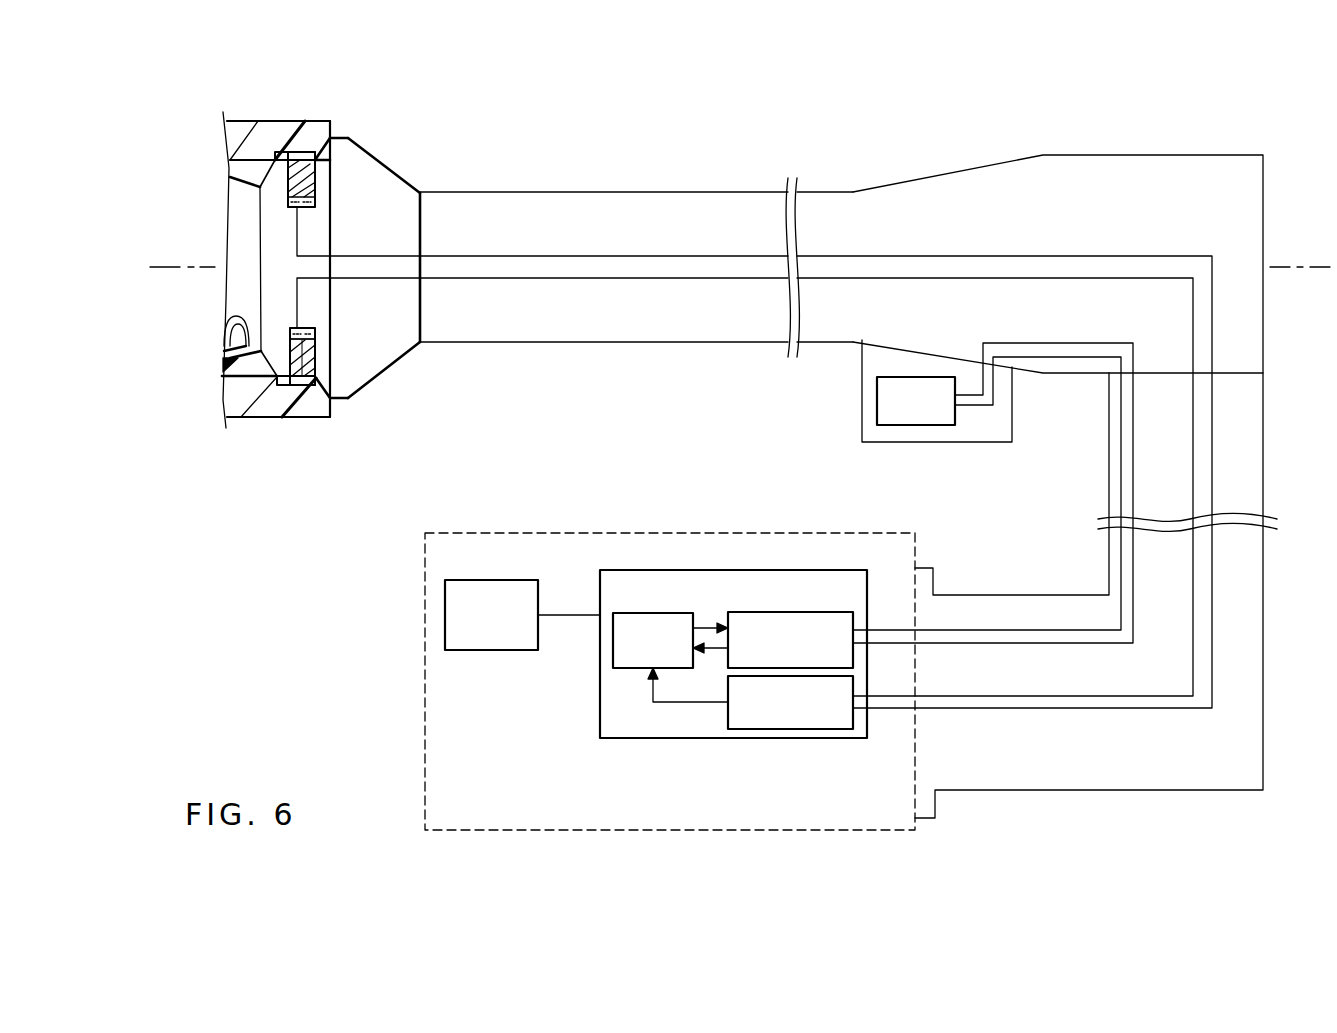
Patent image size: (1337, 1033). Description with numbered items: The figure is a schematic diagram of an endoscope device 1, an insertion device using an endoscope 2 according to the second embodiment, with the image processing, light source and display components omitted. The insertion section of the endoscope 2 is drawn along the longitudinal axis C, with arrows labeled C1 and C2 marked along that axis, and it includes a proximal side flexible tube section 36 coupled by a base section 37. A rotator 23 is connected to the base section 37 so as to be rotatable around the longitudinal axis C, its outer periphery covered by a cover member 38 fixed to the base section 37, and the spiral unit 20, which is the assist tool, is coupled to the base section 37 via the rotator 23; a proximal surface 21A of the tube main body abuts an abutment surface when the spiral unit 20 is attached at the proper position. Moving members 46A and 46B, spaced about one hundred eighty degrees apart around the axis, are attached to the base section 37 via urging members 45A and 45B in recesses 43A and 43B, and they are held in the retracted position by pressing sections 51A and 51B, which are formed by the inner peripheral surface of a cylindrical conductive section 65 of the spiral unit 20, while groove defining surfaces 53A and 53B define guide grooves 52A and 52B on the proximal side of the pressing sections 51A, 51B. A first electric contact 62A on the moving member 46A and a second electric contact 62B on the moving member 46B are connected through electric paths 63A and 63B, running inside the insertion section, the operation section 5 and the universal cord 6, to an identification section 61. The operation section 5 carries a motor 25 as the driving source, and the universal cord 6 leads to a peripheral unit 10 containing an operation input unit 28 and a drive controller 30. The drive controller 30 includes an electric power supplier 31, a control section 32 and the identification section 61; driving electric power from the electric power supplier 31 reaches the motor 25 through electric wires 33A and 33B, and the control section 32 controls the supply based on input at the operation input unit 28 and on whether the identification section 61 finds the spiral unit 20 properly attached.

The endoscope device 1 is at (989, 123).
The endoscope 2 is at (636, 244).
The operation section 5 is at (1188, 170).
The universal cord 6 is at (1243, 468).
The peripheral unit 10 is at (800, 532).
The spiral unit 20 is at (239, 422).
The proximal surface 21A is at (330, 130).
The rotator 23 is at (230, 331).
The motor 25 is at (957, 415).
The operation input unit 28 is at (492, 651).
The drive controller 30 is at (837, 592).
The electric power supplier 31 is at (793, 612).
The control section 32 is at (630, 669).
The electric wire 33A is at (1121, 432).
The electric wire 33B is at (1133, 468).
The proximal side flexible tube section 36 is at (481, 343).
The base section 37 is at (379, 200).
The cover member 38 is at (240, 352).
The recess 43A is at (305, 203).
The recess 43B is at (289, 330).
The urging member 45A is at (318, 203).
The urging member 45B is at (316, 334).
The moving member 46A is at (210, 255).
The moving member 46B is at (223, 384).
The pressing section 51A is at (293, 152).
The pressing section 51B is at (294, 388).
The guide groove 52A is at (323, 158).
The guide groove 52B is at (328, 388).
The groove defining surface 53A is at (336, 139).
The groove defining surface 53B is at (330, 386).
The identification section 61 is at (792, 730).
The first electric contact 62A is at (292, 187).
The second electric contact 62B is at (291, 366).
The first electric path 63A is at (492, 256).
The second electric path 63B is at (542, 278).
The conductive section 65 is at (302, 390).
The longitudinal axis C is at (1306, 270).
The distal direction C1 is at (605, 75).
The proximal direction C2 is at (743, 75).